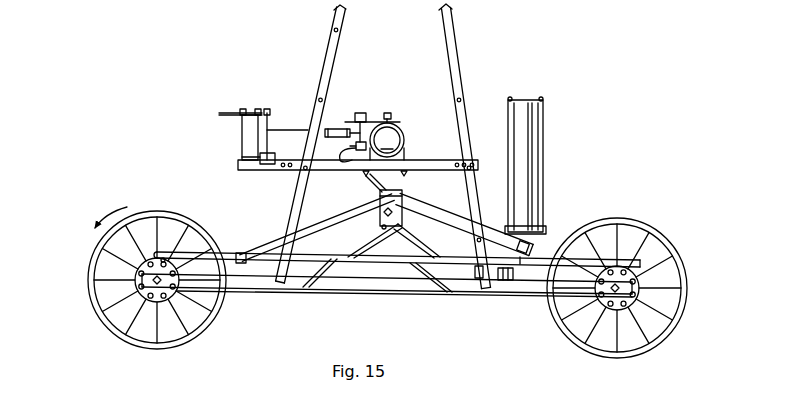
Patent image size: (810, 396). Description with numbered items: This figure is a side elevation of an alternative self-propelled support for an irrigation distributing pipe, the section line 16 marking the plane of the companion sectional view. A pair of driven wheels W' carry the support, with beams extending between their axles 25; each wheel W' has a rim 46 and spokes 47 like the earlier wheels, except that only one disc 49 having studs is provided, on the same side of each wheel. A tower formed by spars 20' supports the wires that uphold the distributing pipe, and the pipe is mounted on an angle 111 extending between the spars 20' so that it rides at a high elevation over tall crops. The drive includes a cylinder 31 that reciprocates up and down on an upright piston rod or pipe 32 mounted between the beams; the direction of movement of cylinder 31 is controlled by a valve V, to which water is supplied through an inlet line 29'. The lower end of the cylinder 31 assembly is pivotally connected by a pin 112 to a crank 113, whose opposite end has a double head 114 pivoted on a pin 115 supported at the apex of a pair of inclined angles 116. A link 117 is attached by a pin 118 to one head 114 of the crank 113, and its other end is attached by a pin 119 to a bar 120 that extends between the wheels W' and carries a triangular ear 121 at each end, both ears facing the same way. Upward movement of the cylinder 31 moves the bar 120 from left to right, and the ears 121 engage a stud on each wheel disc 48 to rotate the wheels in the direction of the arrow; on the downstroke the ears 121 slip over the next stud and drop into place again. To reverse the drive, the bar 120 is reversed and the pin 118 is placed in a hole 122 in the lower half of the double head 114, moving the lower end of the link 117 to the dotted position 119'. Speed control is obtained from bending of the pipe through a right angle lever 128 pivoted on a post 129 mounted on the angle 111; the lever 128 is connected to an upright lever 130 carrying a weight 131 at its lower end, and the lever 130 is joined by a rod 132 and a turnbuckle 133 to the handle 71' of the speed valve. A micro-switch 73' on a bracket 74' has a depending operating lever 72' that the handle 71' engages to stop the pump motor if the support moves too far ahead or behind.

The section line 16 is at (188, 62).
The spar 20' is at (383, 146).
The axle 25 is at (161, 280).
The inlet line 29' is at (354, 184).
The cylinder 31 is at (527, 172).
The piston rod or pipe 32 is at (520, 258).
The wheel rim 46 is at (211, 319).
The spoke 47 is at (128, 308).
The wheel disc 48 is at (160, 303).
The disc 49 is at (138, 269).
The valve handle 71' is at (336, 148).
The operating lever 72' is at (390, 125).
The micro-switch 73' is at (372, 116).
The bracket 74' is at (353, 114).
The angle 111 is at (420, 160).
The pin 112 is at (530, 241).
The crank 113 is at (453, 226).
The double head 114 is at (397, 196).
The pin 115 is at (404, 206).
The inclined angles 116 is at (412, 240).
The link 117 is at (340, 217).
The pin 118 is at (386, 199).
The pin 119 is at (242, 235).
The dotted position 119' is at (548, 242).
The bar 120 is at (305, 259).
The triangular ear 121 is at (180, 259).
The hole 122 is at (381, 227).
The right angle lever 128 is at (232, 112).
The post 129 is at (242, 139).
The upright lever 130 is at (268, 124).
The weight 131 is at (265, 165).
The rod 132 is at (307, 131).
The turnbuckle 133 is at (335, 129).
The valve V is at (466, 281).
The wheel W' is at (371, 272).